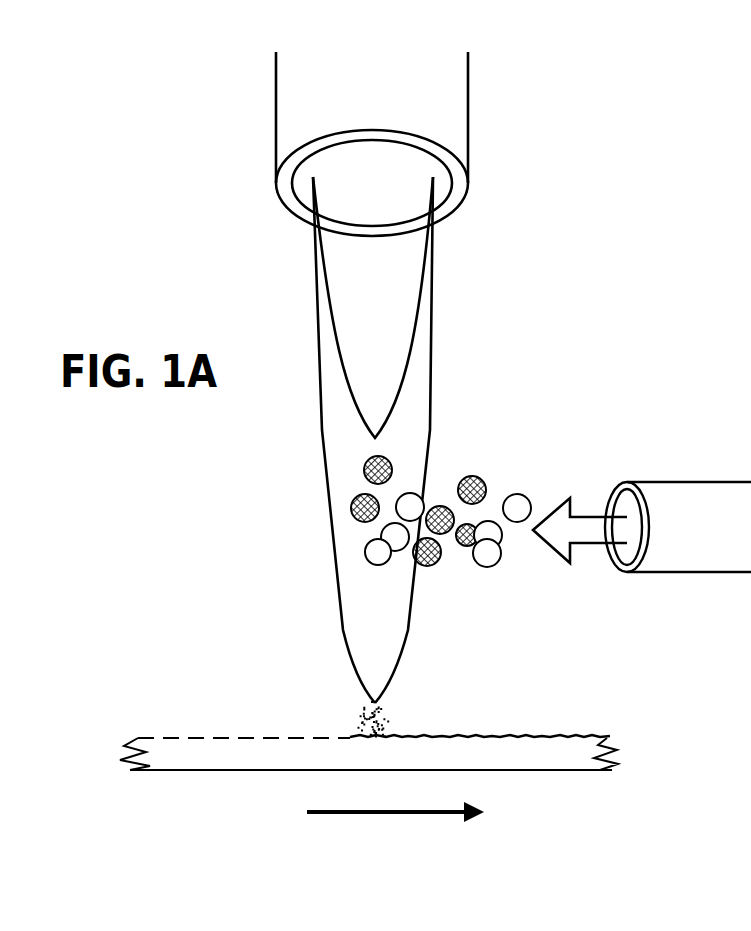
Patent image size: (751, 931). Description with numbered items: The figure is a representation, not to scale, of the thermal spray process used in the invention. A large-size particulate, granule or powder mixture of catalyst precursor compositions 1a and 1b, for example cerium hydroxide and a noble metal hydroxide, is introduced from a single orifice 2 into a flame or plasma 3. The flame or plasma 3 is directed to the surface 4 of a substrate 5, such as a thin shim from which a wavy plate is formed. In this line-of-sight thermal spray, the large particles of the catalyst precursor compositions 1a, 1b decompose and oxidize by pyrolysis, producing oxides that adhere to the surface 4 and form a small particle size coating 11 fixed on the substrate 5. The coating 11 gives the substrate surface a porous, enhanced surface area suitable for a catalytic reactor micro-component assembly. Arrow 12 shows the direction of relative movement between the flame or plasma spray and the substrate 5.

The catalyst precursor composition 1a is at (480, 485).
The catalyst precursor composition 1b is at (492, 538).
The orifice 2 is at (673, 492).
The flame or plasma 3 is at (340, 467).
The surface 4 is at (180, 738).
The substrate 5 is at (180, 762).
The coating 11 is at (512, 735).
The arrow 12 is at (395, 830).